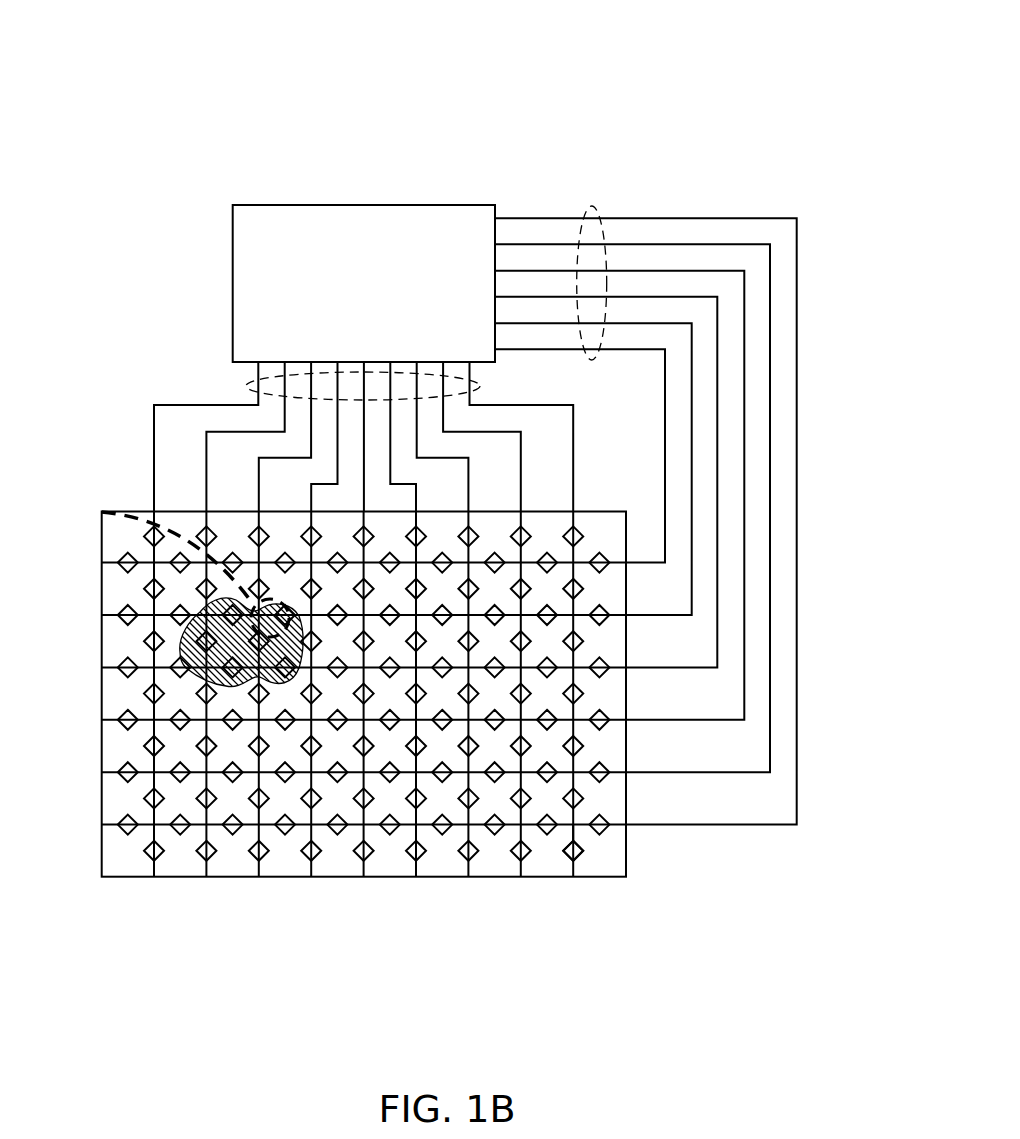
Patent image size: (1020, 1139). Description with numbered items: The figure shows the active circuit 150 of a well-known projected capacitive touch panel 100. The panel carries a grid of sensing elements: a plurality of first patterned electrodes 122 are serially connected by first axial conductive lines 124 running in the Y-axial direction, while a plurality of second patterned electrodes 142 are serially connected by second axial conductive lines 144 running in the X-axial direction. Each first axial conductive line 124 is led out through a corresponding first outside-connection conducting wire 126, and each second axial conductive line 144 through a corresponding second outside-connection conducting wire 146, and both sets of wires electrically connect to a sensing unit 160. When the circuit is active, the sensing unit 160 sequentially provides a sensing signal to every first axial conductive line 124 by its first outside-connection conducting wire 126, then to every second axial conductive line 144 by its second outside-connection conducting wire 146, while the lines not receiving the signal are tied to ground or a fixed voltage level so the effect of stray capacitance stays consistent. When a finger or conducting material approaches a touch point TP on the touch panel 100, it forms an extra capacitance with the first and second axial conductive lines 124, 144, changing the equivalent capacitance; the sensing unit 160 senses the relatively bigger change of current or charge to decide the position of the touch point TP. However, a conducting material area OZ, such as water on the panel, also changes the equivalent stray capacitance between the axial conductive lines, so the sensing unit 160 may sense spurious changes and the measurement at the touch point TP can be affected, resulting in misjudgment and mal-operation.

The active circuit 150 is at (748, 113).
The sensing unit 160 is at (345, 300).
The second outside-connection conducting wires 146 is at (600, 194).
The first outside-connection conducting wires 126 is at (246, 386).
The projected capacitive touch panel 100 is at (347, 705).
The second patterned electrodes 142 is at (145, 563).
The second axial conductive lines 144 is at (145, 565).
The first patterned electrodes 122 is at (575, 847).
The first axial conductive lines 124 is at (578, 834).
The touch point TP is at (101, 512).
The conducting material area OZ is at (193, 677).